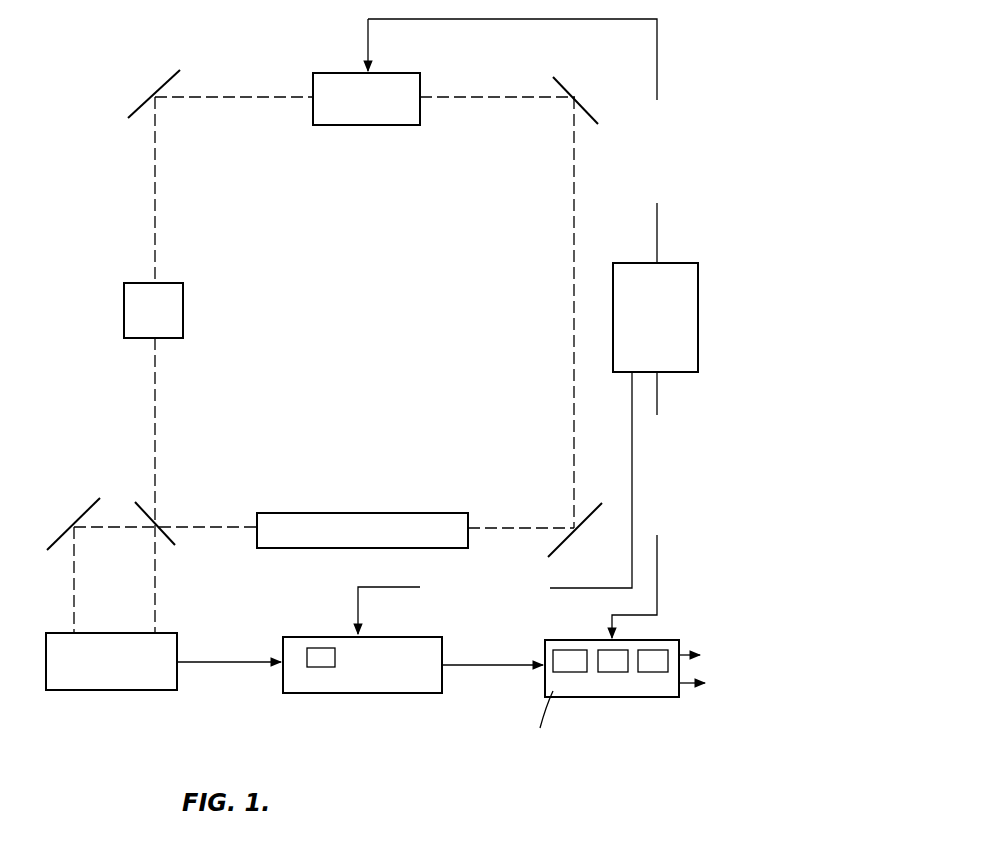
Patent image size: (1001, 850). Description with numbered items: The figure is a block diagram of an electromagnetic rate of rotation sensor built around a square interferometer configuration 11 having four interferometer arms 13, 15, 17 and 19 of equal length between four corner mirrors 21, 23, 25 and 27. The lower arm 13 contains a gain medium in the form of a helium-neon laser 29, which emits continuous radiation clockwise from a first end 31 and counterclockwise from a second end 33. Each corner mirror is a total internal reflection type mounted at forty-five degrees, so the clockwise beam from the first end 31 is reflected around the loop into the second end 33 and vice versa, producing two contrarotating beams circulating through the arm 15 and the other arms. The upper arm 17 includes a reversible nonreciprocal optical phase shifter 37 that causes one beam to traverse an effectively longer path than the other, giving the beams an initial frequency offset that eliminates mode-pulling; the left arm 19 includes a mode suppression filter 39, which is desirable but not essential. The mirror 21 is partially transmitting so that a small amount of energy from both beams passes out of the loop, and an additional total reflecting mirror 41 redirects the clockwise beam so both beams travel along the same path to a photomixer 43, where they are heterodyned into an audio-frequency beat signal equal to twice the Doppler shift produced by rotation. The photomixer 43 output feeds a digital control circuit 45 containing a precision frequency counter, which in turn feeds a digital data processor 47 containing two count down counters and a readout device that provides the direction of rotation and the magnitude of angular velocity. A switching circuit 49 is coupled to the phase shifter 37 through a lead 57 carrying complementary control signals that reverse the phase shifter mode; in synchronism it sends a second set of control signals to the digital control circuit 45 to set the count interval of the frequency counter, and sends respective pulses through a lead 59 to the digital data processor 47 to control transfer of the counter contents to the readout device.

The square interferometer configuration 11 is at (124, 172).
The lower interferometer arm 13 is at (372, 500).
The interferometer arm 15 is at (556, 318).
The upper interferometer arm 17 is at (355, 135).
The left interferometer arm 19 is at (195, 318).
The partially transmitting corner mirror 21 is at (178, 552).
The corner mirror 23 is at (555, 556).
The corner mirror 25 is at (553, 80).
The corner mirror 27 is at (167, 80).
The laser 29 is at (330, 542).
The first end of laser 31 is at (257, 545).
The second end of laser 33 is at (470, 520).
The reversible nonreciprocal optical phase shifter 37 is at (335, 73).
The mode suppression filter 39 is at (172, 292).
The total reflecting mirror 41 is at (72, 527).
The photomixer 43 is at (105, 677).
The digital control circuit 45 is at (400, 685).
The digital data processor 47 is at (628, 684).
The switching circuit 49 is at (688, 327).
The lead 57 is at (657, 65).
The lead 59 is at (657, 404).